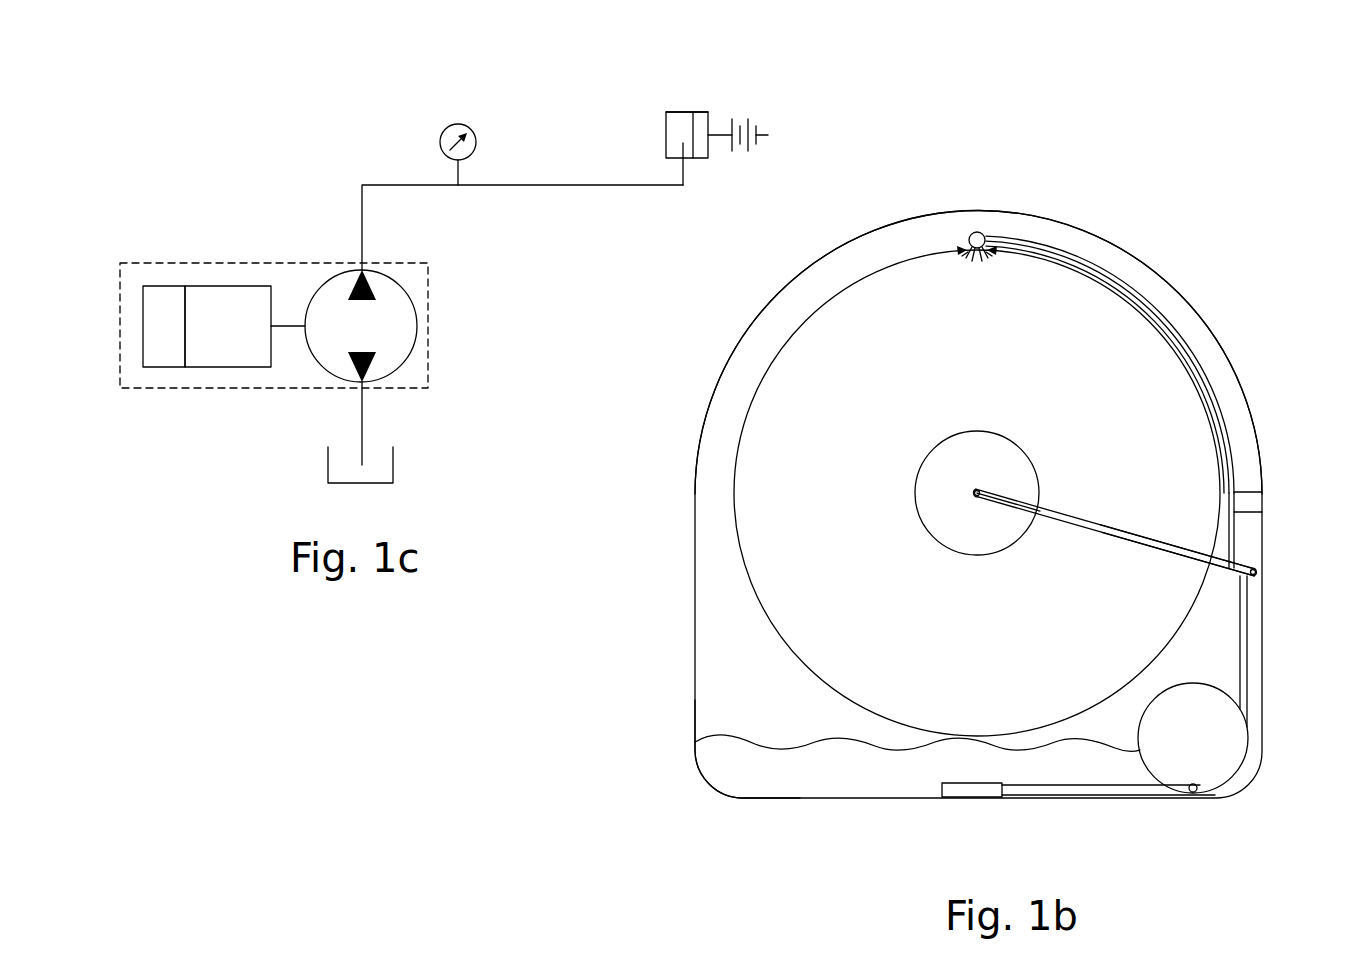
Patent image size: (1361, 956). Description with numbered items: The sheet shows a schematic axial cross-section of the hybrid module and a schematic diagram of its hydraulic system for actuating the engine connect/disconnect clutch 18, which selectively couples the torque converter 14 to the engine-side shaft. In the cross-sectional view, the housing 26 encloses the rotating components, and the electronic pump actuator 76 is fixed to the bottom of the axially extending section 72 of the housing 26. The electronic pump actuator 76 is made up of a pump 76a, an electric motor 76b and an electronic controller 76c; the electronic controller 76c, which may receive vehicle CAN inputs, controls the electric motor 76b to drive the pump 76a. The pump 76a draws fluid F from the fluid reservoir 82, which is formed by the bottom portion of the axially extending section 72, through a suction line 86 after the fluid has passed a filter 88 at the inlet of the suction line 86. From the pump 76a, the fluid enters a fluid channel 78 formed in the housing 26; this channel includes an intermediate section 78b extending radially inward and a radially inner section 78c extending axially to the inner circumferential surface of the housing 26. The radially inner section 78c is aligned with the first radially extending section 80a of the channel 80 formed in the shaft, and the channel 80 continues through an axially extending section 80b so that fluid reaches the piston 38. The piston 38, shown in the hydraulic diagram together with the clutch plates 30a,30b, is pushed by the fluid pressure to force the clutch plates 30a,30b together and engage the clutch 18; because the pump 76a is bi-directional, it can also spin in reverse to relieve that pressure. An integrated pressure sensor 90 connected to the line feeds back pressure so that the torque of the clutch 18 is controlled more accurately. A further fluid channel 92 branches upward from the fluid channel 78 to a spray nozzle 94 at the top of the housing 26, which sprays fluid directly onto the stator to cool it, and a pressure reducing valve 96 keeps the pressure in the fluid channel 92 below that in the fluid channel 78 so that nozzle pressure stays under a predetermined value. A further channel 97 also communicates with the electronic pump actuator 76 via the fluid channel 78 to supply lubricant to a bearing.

In FIG. 1b, the torque converter 14 is at (917, 268).
In FIG. 1c, the engine connect/disconnect clutch 18 is at (722, 90).
In FIG. 1b, the engine connect/disconnect clutch 18 is at (968, 430).
In FIG. 1b, the housing 26 is at (693, 523).
In FIG. 1c, the outer and inner splined clutch plates 30a,30b is at (776, 125).
In FIG. 1c, the piston 38 is at (681, 112).
In FIG. 1b, the axially extending section 72 is at (748, 322).
In FIG. 1c, the electronic pump actuator 76 is at (167, 388).
In FIG. 1b, the electronic pump actuator 76 is at (1215, 775).
In FIG. 1c, the pump 76a is at (392, 362).
In FIG. 1c, the electric motor 76b is at (245, 296).
In FIG. 1c, the electronic controller 76c is at (165, 296).
In FIG. 1c, the fluid channel 78 is at (541, 188).
In FIG. 1b, the fluid channel 78 is at (1255, 655).
In FIG. 1b, the intermediate section 78b is at (1183, 553).
In FIG. 1b, the radially inner section 78c is at (1042, 508).
In FIG. 1c, the channel 80 is at (686, 172).
In FIG. 1b, the first radially extending section 80a is at (1003, 504).
In FIG. 1b, the axially extending section 80b is at (972, 498).
In FIG. 1c, the fluid reservoir 82 is at (327, 460).
In FIG. 1b, the fluid reservoir 82 is at (691, 766).
In FIG. 1b, the suction line 86 is at (1067, 793).
In FIG. 1b, the filter 88 is at (948, 790).
In FIG. 1c, the pressure sensor 90 is at (458, 124).
In FIG. 1b, the fluid channel 92 is at (1185, 342).
In FIG. 1b, the spray nozzle 94 is at (982, 230).
In FIG. 1b, the pressure reducing valve 96 is at (1245, 490).
In FIG. 1b, the further channel 97 is at (1260, 578).
In FIG. 1b, the fluid F is at (787, 765).